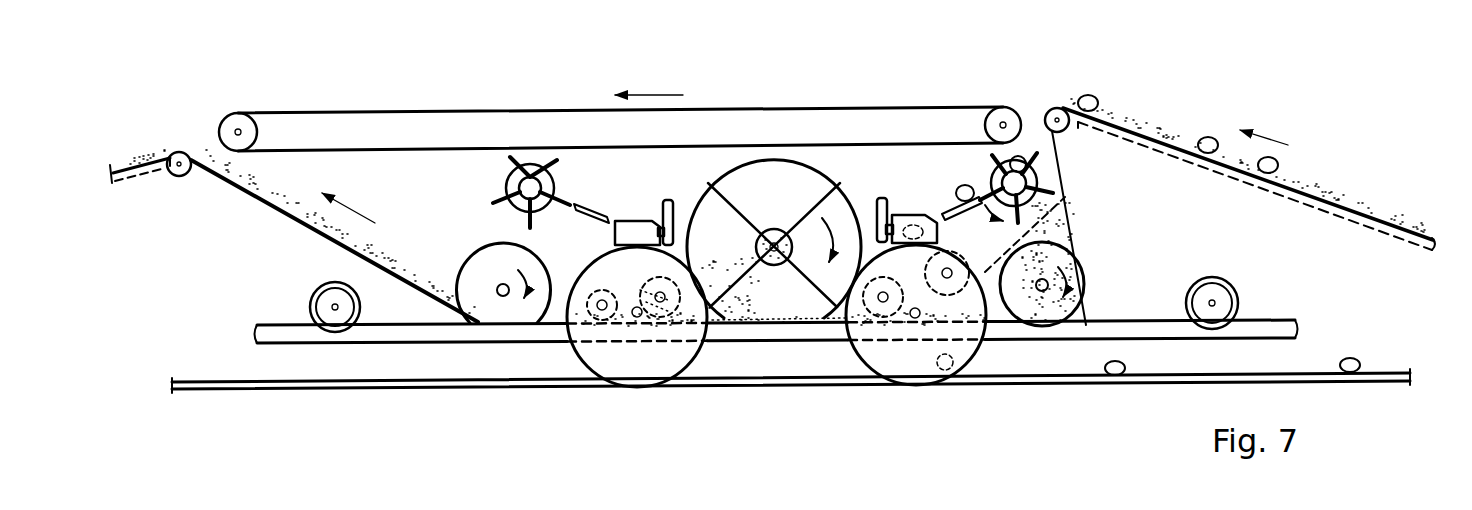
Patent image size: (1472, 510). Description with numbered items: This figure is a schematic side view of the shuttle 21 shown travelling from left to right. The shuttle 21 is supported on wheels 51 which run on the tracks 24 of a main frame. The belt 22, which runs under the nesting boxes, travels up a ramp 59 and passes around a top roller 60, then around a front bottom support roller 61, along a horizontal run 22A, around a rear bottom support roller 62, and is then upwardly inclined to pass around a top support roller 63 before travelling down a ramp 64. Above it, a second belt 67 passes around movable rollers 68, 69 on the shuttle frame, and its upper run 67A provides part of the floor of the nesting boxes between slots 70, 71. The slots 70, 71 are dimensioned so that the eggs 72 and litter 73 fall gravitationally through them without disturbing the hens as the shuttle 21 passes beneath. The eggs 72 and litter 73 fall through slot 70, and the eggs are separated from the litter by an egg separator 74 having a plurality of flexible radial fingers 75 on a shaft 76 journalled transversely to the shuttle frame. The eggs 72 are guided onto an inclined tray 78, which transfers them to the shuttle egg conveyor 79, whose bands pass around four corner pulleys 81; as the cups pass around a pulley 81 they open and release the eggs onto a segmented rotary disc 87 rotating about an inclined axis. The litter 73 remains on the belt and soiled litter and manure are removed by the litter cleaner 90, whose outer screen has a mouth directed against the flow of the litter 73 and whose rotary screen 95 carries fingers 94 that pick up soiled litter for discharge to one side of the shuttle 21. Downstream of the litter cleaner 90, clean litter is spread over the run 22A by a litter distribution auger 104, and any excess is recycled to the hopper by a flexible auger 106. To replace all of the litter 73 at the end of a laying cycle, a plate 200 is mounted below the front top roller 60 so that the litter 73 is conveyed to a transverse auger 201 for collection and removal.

The shuttle 21 is at (1190, 107).
The belt 22 is at (1282, 200).
The horizontal run 22A is at (1008, 330).
The tracks 24 is at (1278, 316).
The wheels 51 is at (322, 306).
The ramp 59 is at (1163, 158).
The top roller 60 is at (1066, 131).
The front bottom support roller 61 is at (1079, 290).
The rear bottom support roller 62 is at (502, 306).
The top support roller 63 is at (183, 176).
The ramp 64 is at (130, 178).
The second belt 67 is at (830, 107).
The upper run 67A is at (425, 112).
The movable roller 68 is at (243, 127).
The movable roller 69 is at (1000, 115).
The slot 70 is at (1032, 112).
The slot 71 is at (215, 148).
The eggs 72 is at (1098, 97).
The litter 73 is at (1318, 182).
The egg separator 74 is at (497, 183).
The flexible radial fingers 75 is at (1055, 196).
The shaft 76 is at (1040, 185).
The inclined tray 78 is at (963, 204).
The shuttle egg conveyor 79 is at (897, 197).
The corner pulleys 81 is at (634, 220).
The segmented rotary disc 87 is at (704, 358).
The litter cleaner 90 is at (775, 313).
The fingers 94 is at (812, 288).
The rotary screen 95 is at (798, 218).
The litter distribution auger 104 is at (676, 313).
The flexible auger 106 is at (600, 313).
The plate 200 is at (1050, 224).
The transverse auger 201 is at (955, 293).